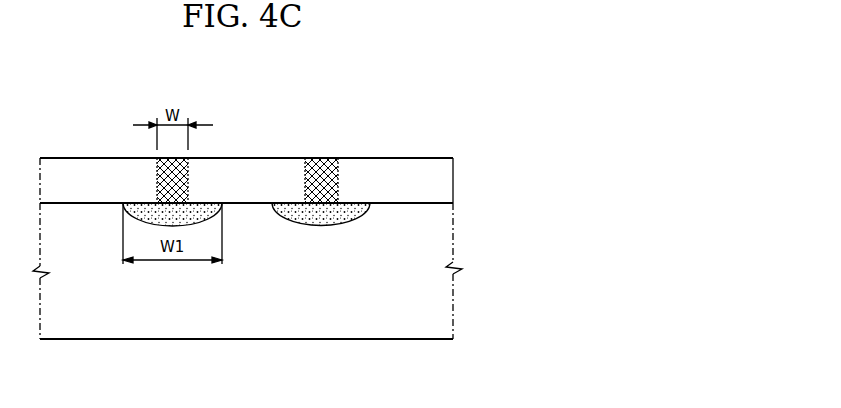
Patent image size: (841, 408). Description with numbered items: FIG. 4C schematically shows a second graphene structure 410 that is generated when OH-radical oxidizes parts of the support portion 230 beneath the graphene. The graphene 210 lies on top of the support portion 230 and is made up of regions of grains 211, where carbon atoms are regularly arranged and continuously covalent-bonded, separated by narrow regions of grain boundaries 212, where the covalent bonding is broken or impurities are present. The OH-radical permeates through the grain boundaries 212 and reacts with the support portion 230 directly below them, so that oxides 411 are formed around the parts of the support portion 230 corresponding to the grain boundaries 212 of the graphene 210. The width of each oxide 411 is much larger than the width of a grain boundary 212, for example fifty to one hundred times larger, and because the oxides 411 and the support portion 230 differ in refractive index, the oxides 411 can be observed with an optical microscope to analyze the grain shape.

The graphene 210 is at (462, 158).
The grains 211 is at (96, 163).
The grain boundaries 212 is at (323, 158).
The support portion 230 is at (451, 296).
The second graphene structure 410 is at (432, 116).
The oxides 411 is at (321, 226).